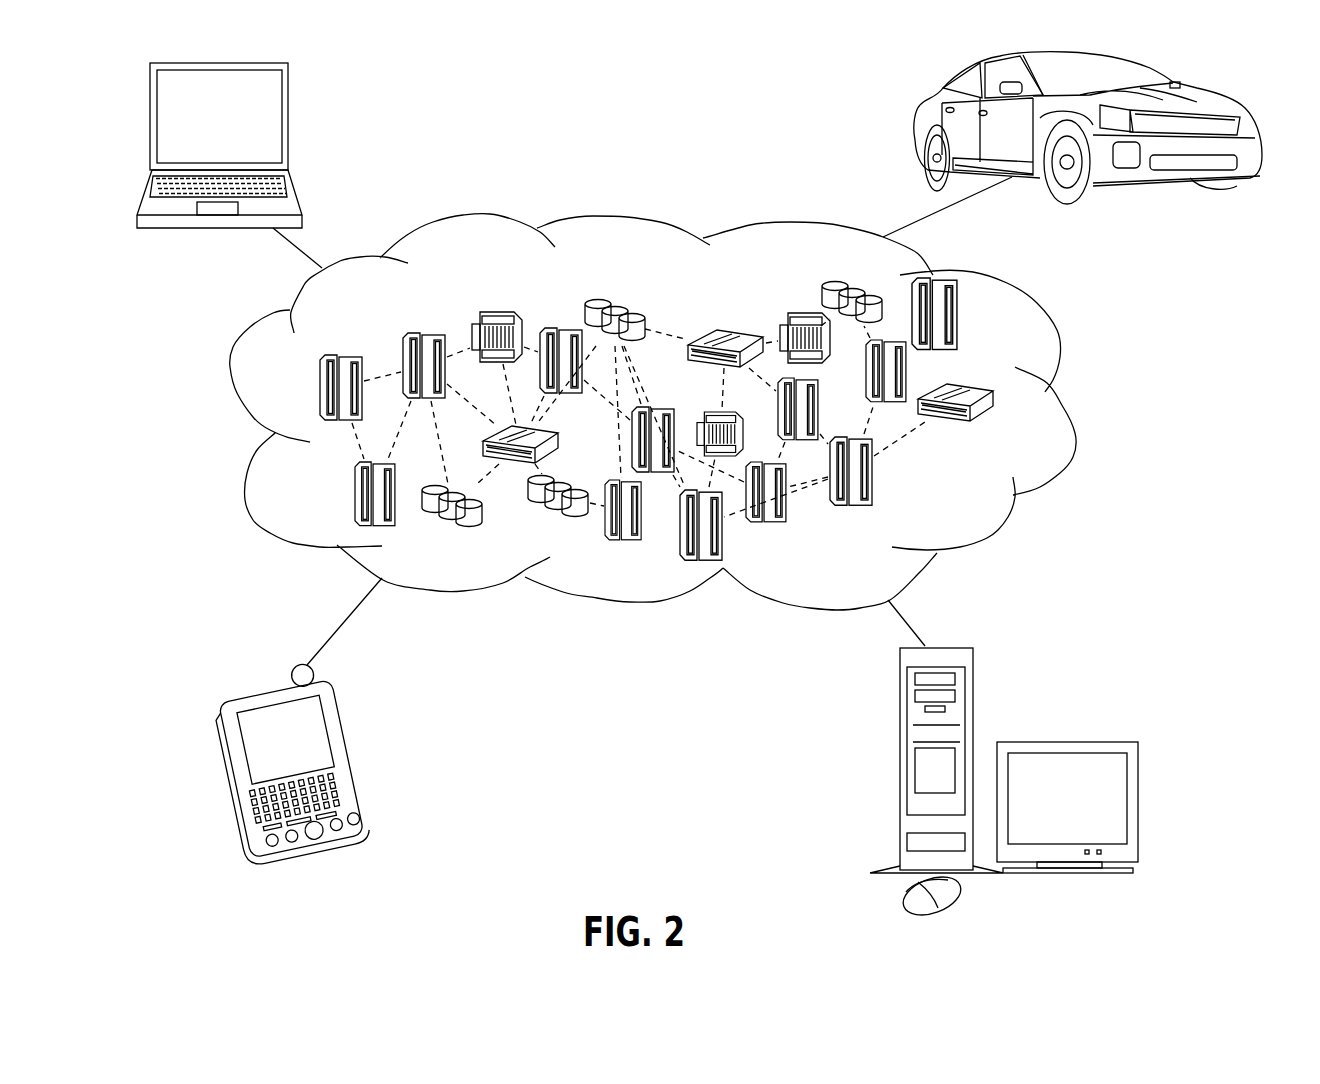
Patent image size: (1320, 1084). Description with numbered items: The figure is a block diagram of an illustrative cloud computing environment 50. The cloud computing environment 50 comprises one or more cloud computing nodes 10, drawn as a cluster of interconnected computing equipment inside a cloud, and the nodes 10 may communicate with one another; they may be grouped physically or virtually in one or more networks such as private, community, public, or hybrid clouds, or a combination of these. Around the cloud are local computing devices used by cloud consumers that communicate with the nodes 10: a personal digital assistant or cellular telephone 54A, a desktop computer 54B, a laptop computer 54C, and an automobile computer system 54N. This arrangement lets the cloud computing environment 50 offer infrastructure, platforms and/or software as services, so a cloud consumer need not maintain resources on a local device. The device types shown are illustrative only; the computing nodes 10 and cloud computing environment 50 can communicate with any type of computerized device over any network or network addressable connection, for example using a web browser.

The cloud computing environment 50 is at (1060, 400).
The cloud computing node 10 is at (978, 503).
The personal digital assistant (PDA) or cellular telephone 54A is at (343, 723).
The desktop computer 54B is at (898, 708).
The laptop computer 54C is at (288, 100).
The automobile computer system 54N is at (920, 105).